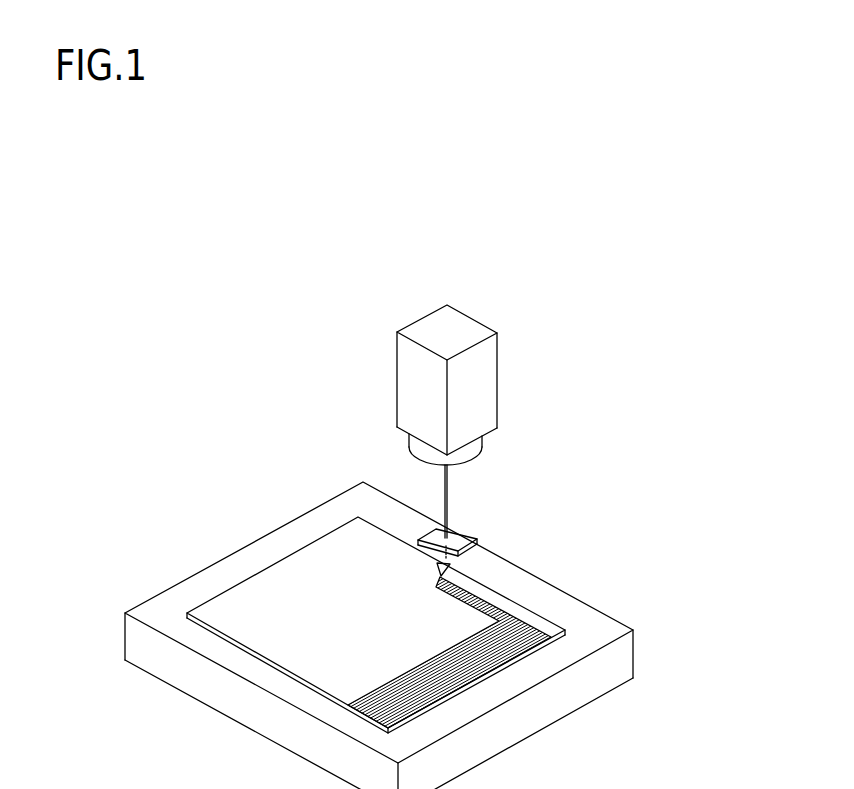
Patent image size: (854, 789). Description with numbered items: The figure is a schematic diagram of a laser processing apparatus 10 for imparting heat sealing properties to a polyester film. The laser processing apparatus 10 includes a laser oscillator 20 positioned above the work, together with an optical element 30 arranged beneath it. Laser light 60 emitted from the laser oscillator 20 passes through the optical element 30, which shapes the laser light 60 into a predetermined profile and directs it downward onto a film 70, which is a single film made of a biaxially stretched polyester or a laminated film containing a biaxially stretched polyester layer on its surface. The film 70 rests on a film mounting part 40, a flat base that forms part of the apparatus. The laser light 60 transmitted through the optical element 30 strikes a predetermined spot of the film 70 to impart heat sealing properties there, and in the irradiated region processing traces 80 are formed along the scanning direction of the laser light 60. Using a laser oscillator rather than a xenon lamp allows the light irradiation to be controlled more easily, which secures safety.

The laser processing apparatus 10 is at (137, 148).
The laser oscillator 20 is at (487, 375).
The optical element 30 is at (460, 537).
The film mounting part 40 is at (628, 655).
The laser light 60 is at (455, 567).
The film 70 is at (277, 583).
The processing traces 80 is at (520, 603).